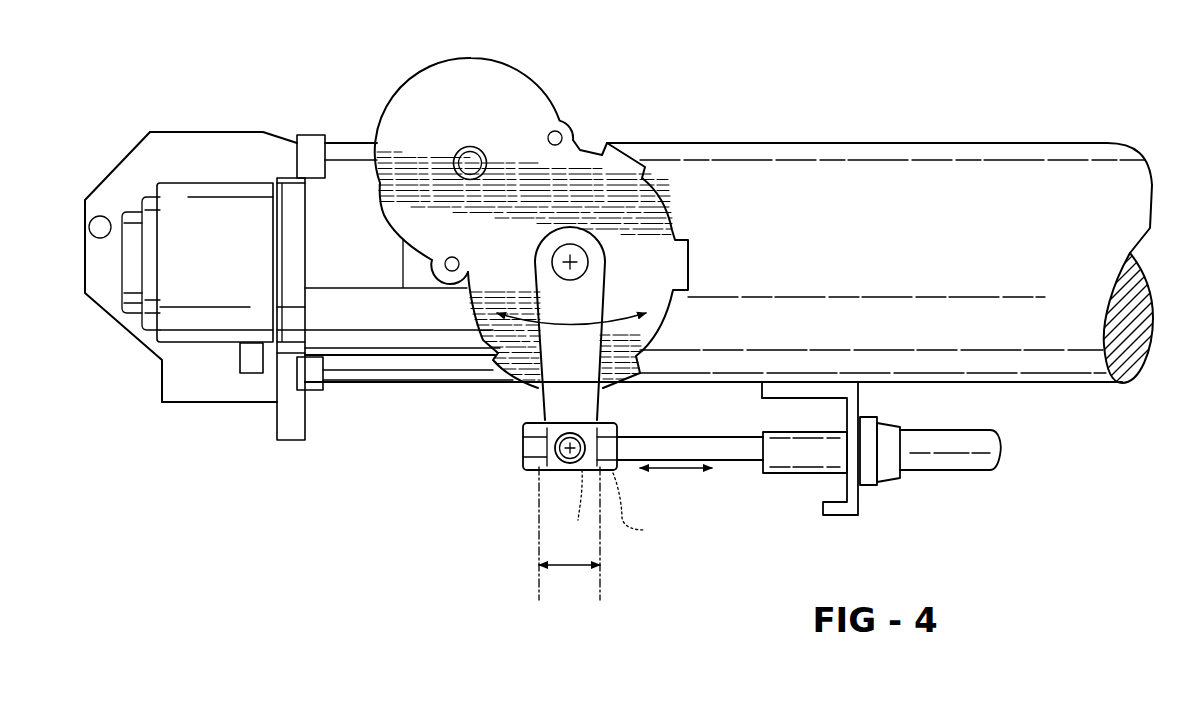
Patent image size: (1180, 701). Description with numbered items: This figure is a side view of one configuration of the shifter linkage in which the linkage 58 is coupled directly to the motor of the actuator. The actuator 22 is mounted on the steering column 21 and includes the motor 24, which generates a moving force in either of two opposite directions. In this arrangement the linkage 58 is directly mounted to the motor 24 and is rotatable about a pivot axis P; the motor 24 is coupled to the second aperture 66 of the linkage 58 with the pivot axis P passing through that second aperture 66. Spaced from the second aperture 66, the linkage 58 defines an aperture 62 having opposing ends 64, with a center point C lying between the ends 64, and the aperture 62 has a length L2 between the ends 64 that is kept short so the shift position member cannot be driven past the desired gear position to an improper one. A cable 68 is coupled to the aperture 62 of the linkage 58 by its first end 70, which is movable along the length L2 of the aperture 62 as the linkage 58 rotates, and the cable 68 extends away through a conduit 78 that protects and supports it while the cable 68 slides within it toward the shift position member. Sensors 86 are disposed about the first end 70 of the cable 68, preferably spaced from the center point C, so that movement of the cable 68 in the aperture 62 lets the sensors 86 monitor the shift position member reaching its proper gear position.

The steering column 21 is at (900, 165).
The actuator 22 is at (378, 68).
The motor 24 is at (497, 92).
The linkage 58 is at (573, 398).
The aperture 62 is at (537, 443).
The opposing ends 64 is at (527, 445).
The second aperture 66 is at (668, 230).
The cable 68 is at (737, 462).
The first end 70 is at (602, 430).
The conduit 78 is at (967, 470).
The sensors 86 is at (543, 471).
The pivot axis P is at (580, 258).
The center point C is at (543, 427).
The length L2 is at (567, 567).